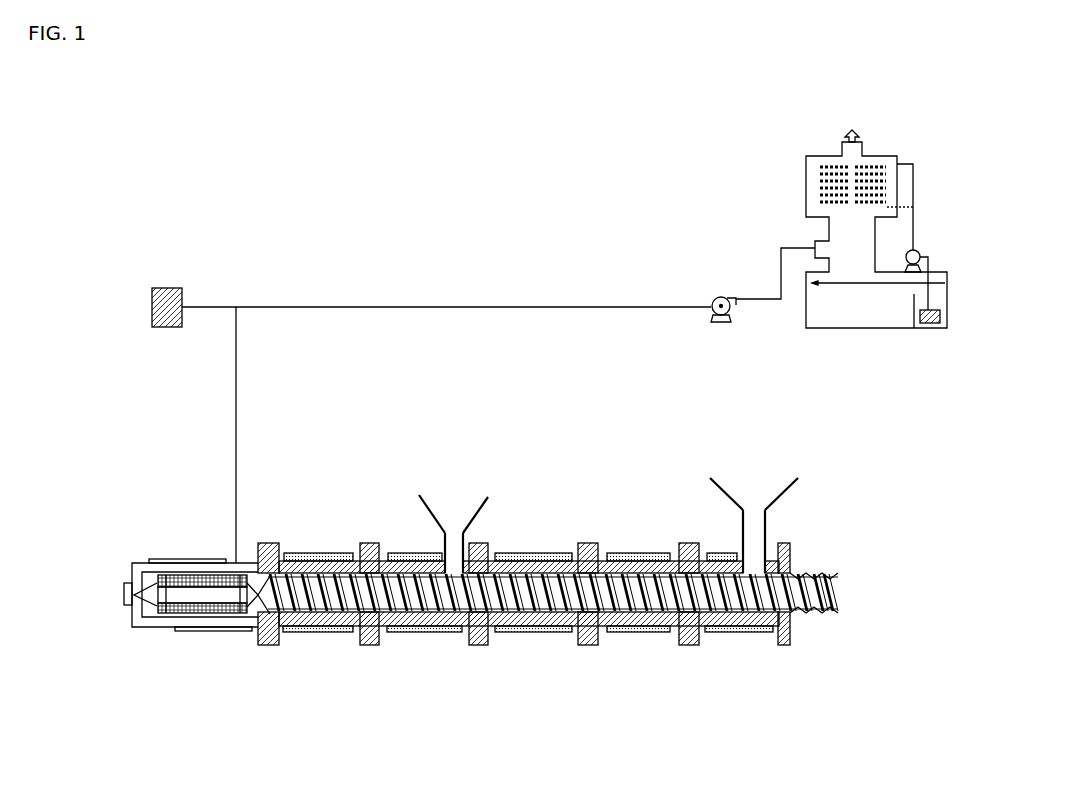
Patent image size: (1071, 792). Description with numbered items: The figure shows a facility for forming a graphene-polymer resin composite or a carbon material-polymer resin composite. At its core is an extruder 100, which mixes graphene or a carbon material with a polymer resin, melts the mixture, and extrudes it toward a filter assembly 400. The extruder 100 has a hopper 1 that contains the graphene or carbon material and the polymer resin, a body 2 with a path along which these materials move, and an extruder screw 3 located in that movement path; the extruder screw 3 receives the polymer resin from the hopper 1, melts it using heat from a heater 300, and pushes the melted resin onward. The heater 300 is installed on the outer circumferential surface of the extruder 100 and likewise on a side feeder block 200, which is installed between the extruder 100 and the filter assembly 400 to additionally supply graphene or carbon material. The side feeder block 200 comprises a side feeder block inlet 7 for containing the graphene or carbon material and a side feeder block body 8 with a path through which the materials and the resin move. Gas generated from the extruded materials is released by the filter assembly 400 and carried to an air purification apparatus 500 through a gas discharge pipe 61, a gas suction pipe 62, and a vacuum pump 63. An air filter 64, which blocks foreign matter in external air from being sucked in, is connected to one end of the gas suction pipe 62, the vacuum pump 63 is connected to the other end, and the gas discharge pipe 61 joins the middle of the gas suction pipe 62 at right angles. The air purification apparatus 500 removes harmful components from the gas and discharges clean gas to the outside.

The hopper 1 is at (751, 485).
The body 2 is at (591, 543).
The extruder screw 3 is at (823, 575).
The side feeder block inlet 7 is at (488, 497).
The side feeder block body 8 is at (464, 646).
The gas discharge pipe 61 is at (236, 392).
The gas suction pipe 62 is at (300, 305).
The vacuum pump 63 is at (723, 325).
The air filter 64 is at (165, 287).
The extruder 100 is at (553, 613).
The side feeder block 200 is at (463, 589).
The heater 300 is at (754, 581).
The filter assembly 400 is at (197, 690).
The air purification apparatus 500 is at (882, 138).